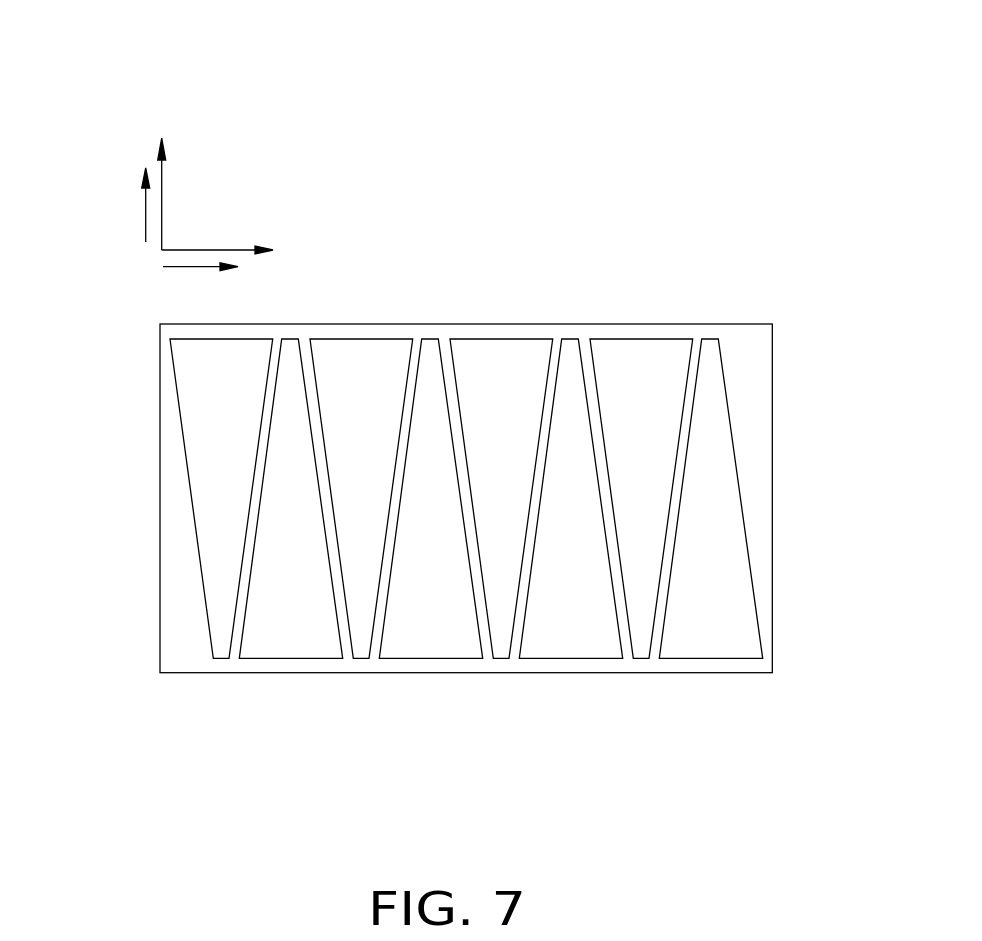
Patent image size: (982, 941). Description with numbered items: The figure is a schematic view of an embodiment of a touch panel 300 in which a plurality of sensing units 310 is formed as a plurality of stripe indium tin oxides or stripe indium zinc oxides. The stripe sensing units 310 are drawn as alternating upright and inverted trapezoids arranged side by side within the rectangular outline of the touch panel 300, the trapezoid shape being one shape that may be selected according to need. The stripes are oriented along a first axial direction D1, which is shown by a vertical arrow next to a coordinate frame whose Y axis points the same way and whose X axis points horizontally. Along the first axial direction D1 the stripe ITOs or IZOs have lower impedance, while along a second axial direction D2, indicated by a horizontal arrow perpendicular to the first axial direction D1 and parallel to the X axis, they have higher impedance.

The touch panel 300 is at (433, 87).
The sensing units 310 is at (361, 353).
The first axial direction D1 is at (128, 205).
The second axial direction D2 is at (200, 285).
The X axis X is at (225, 238).
The Y axis Y is at (169, 182).